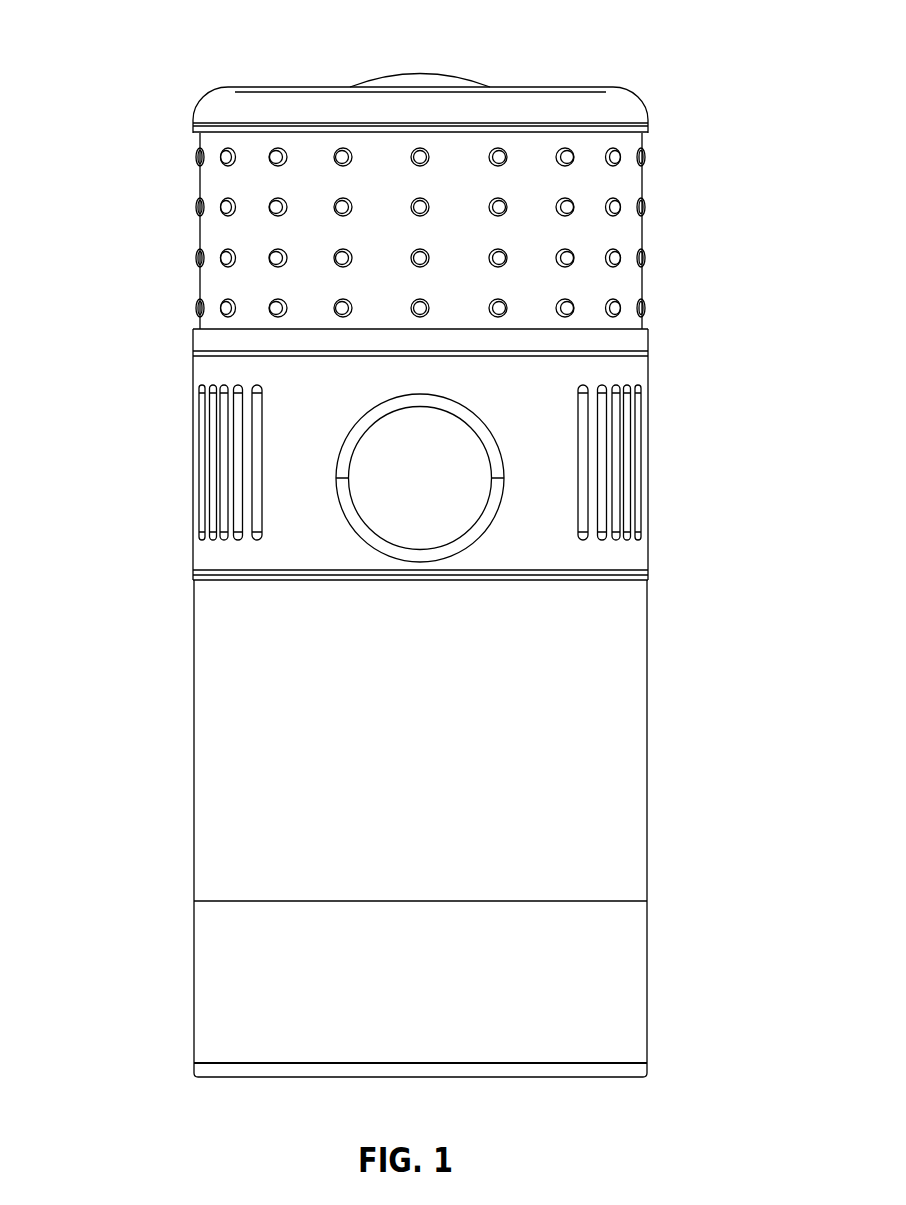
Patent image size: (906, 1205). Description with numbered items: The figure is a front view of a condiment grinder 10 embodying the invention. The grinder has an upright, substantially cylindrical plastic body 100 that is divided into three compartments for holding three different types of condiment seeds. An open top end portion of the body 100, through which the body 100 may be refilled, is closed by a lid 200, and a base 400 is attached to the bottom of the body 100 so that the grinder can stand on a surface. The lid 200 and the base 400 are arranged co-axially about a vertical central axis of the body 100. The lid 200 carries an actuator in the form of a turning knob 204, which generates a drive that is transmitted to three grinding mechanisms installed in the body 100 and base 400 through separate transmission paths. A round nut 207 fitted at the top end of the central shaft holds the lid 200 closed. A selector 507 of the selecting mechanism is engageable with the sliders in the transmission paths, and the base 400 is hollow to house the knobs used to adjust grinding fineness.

The condiment grinder 10 is at (655, 59).
The lid 200 is at (157, 85).
The round nut 207 is at (420, 80).
The turning knob 204 is at (634, 236).
The selector 507 is at (647, 470).
The body 100 is at (631, 748).
The base 400 is at (631, 1004).